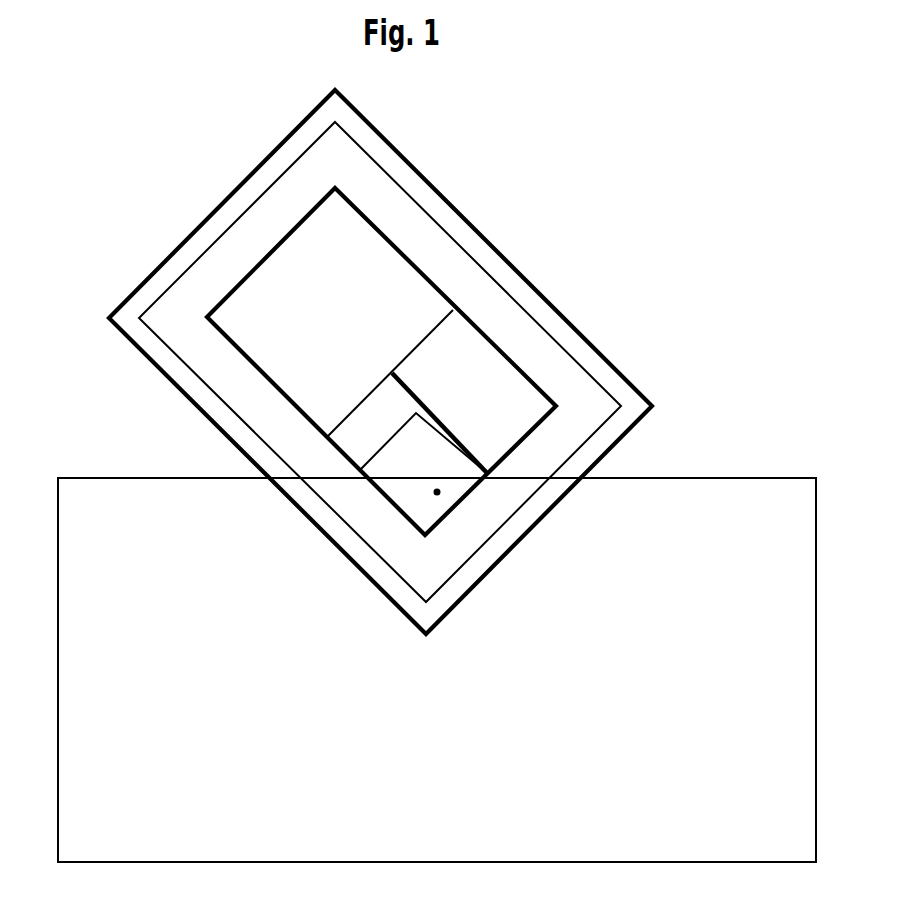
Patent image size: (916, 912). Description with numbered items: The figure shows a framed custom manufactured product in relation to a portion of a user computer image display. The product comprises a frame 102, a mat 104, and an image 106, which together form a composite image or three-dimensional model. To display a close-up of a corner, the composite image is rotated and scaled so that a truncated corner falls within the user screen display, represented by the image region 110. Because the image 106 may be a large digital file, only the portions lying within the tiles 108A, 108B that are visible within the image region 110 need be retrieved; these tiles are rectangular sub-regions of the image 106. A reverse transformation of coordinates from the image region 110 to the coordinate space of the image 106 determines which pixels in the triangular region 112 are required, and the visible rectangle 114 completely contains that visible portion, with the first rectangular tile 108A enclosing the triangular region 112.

The frame 102 is at (413, 163).
The mat 104 is at (477, 262).
The image 106 is at (447, 293).
The first rectangular tile 108A is at (417, 393).
The second tile 108B is at (528, 375).
The image region 110 is at (816, 573).
The triangular region 112 is at (437, 492).
The visible rectangle 114 is at (383, 442).